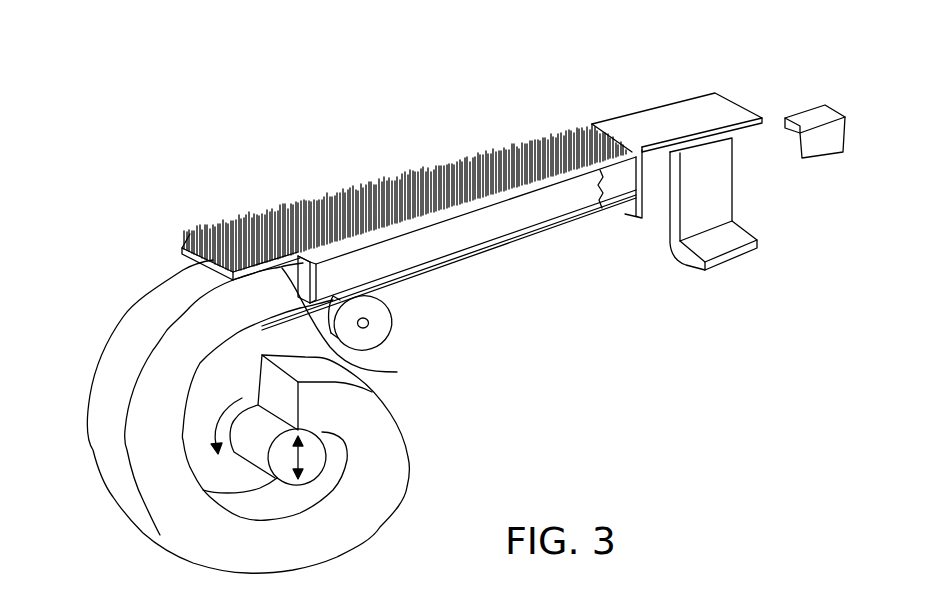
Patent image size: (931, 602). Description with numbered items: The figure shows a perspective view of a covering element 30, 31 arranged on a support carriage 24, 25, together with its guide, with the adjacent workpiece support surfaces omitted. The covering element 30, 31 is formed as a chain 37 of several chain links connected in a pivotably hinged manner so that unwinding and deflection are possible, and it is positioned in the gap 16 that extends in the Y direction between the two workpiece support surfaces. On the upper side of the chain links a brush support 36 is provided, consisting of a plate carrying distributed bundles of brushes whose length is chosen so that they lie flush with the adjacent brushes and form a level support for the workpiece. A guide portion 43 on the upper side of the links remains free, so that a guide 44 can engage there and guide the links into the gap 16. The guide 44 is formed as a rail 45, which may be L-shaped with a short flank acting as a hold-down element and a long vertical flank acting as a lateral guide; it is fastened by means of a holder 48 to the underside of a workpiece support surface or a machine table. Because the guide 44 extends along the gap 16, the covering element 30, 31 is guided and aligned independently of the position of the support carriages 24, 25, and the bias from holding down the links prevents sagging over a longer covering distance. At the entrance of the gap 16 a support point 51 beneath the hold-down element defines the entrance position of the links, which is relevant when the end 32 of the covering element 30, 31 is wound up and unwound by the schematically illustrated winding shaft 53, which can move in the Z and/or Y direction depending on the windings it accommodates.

The gap 16 is at (427, 2).
The support carriage 24 is at (718, 79).
The support carriage 25 is at (677, 92).
The covering element 30 is at (404, 202).
The covering element 31 is at (229, 209).
The end of the covering element 32 is at (270, 383).
The brush support 36 is at (542, 114).
The chain 37 is at (88, 324).
The guide portion 43 is at (352, 325).
The guide 44 is at (478, 248).
The rail 45 is at (553, 222).
The holder 48 is at (712, 180).
The support point 51 is at (395, 320).
The winding shaft 53 is at (305, 458).